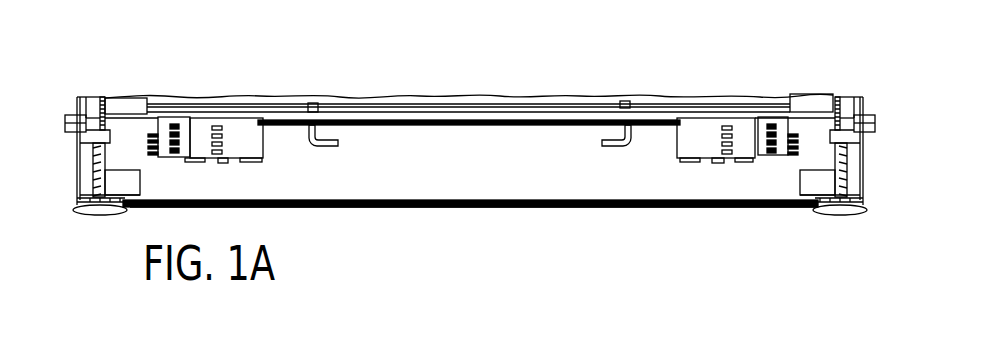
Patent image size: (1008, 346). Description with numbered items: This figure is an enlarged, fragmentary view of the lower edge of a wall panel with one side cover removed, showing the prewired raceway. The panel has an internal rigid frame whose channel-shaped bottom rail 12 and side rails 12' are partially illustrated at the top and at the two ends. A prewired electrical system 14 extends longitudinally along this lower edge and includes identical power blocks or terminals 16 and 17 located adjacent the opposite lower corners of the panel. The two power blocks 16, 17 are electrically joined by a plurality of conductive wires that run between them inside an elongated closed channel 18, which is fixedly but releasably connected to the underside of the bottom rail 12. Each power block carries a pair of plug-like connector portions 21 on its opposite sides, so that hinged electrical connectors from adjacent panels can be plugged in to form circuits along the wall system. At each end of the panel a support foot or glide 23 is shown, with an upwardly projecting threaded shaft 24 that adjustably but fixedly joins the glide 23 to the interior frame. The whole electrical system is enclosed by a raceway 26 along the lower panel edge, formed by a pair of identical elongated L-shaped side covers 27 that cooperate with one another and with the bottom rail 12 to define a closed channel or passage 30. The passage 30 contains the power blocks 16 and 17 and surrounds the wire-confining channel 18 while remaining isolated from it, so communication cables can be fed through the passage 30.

The bottom rail 12 is at (470, 87).
The side rails 12' is at (467, 83).
The prewired electrical system 14 is at (403, 175).
The power block 16 is at (204, 130).
The power block 17 is at (745, 125).
The elongated closed channel 18 is at (410, 118).
The plug-like connector portions 21 is at (171, 118).
The support feet or glides 23 is at (98, 213).
The threaded shafts 24 is at (93, 165).
The raceway 26 is at (627, 208).
The L-shaped side covers 27 is at (285, 183).
The closed channel or passage 30 is at (487, 165).